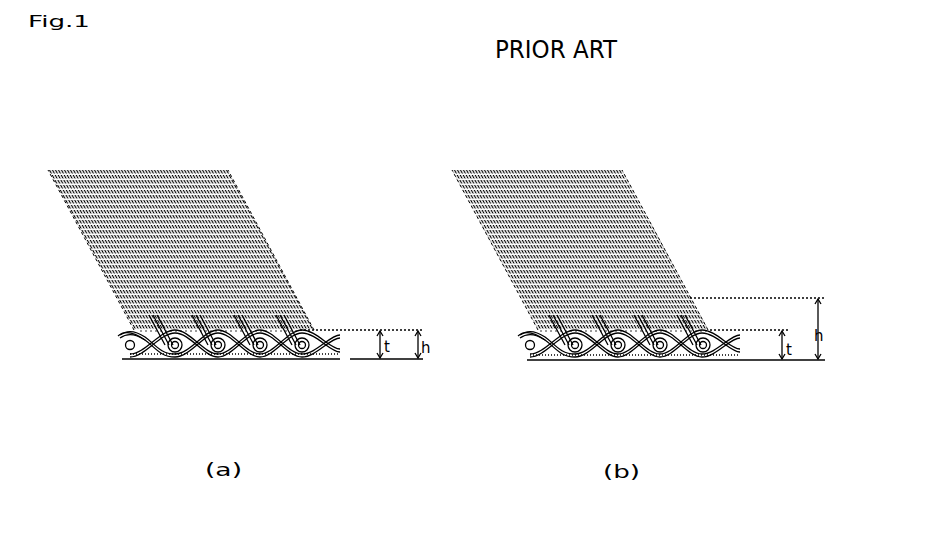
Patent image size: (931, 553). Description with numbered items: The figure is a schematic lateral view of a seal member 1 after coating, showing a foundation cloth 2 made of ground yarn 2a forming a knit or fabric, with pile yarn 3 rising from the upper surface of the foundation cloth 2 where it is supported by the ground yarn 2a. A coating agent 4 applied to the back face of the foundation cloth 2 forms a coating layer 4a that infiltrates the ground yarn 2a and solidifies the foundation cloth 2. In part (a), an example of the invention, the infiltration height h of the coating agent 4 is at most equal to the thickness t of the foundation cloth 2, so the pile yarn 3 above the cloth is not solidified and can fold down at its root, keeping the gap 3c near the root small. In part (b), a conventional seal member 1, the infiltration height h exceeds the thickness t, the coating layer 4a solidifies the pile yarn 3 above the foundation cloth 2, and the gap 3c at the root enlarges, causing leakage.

The seal member 1 is at (298, 277).
The foundation cloth 2 is at (112, 357).
The ground yarn 2a is at (331, 341).
The pile yarn 3 is at (225, 196).
The gap 3c is at (251, 294).
The coating agent 4 is at (282, 362).
The coating layer 4a is at (313, 333).